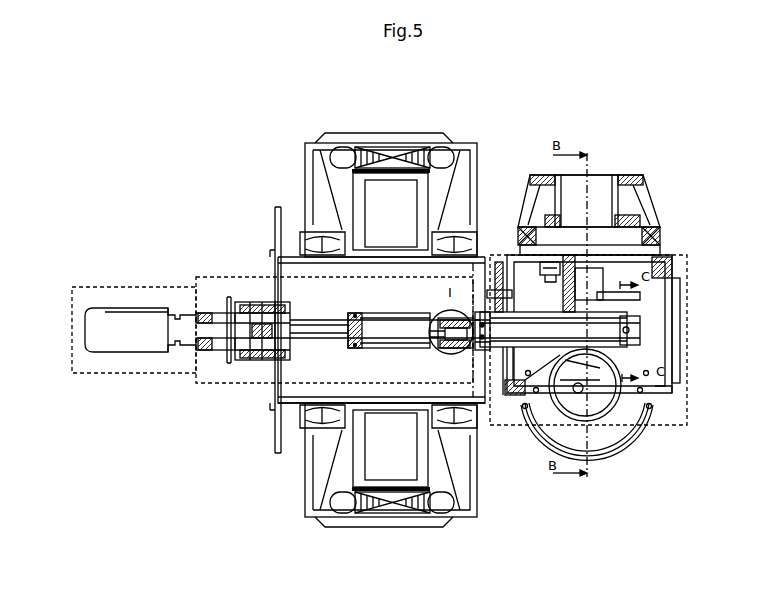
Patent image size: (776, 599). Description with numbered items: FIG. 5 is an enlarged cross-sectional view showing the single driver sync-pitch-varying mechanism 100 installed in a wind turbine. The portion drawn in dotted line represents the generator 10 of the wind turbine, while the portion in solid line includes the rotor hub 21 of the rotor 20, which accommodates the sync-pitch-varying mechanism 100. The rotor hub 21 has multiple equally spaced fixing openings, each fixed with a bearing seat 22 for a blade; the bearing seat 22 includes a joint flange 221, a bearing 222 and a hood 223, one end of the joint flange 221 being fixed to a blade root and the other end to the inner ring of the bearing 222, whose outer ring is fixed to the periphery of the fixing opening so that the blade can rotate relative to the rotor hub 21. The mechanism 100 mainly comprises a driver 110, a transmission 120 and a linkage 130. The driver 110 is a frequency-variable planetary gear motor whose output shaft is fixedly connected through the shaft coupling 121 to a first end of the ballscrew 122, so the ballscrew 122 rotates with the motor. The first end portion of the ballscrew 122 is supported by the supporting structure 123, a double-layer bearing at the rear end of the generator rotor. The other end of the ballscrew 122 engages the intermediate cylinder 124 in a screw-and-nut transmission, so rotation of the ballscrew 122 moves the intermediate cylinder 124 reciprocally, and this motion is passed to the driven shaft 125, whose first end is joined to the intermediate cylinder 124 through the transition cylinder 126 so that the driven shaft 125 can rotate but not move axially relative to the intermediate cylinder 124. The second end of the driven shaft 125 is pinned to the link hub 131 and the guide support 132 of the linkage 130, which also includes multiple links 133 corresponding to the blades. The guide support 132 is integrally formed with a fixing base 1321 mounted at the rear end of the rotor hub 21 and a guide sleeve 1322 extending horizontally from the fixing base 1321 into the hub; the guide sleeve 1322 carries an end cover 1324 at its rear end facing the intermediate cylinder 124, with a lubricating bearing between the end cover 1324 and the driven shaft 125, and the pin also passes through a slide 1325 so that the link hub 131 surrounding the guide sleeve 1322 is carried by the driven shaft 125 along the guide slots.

The generator 10 is at (388, 124).
The rotor 20 is at (688, 132).
The rotor hub 21 is at (668, 265).
The bearing seat 22 is at (539, 165).
The single driver sync-pitch-varying mechanism 100 is at (246, 221).
The driver 110 is at (103, 281).
The transmission 120 is at (206, 271).
The shaft coupling 121 is at (205, 352).
The ballscrew 122 is at (327, 330).
The supporting structure 123 is at (263, 352).
The intermediate cylinder 124 is at (395, 314).
The driven shaft 125 is at (440, 328).
The transition cylinder 126 is at (456, 350).
The linkage 130 is at (664, 434).
The link hub 131 is at (597, 292).
The guide support 132 is at (578, 302).
The link 133 is at (535, 412).
The joint flange 221 is at (622, 174).
The bearing 222 is at (662, 237).
The hood 223 is at (650, 205).
The fixing base 1321 is at (490, 302).
The guide sleeve 1322 is at (608, 309).
The end cover 1324 is at (480, 352).
The slide 1325 is at (636, 325).